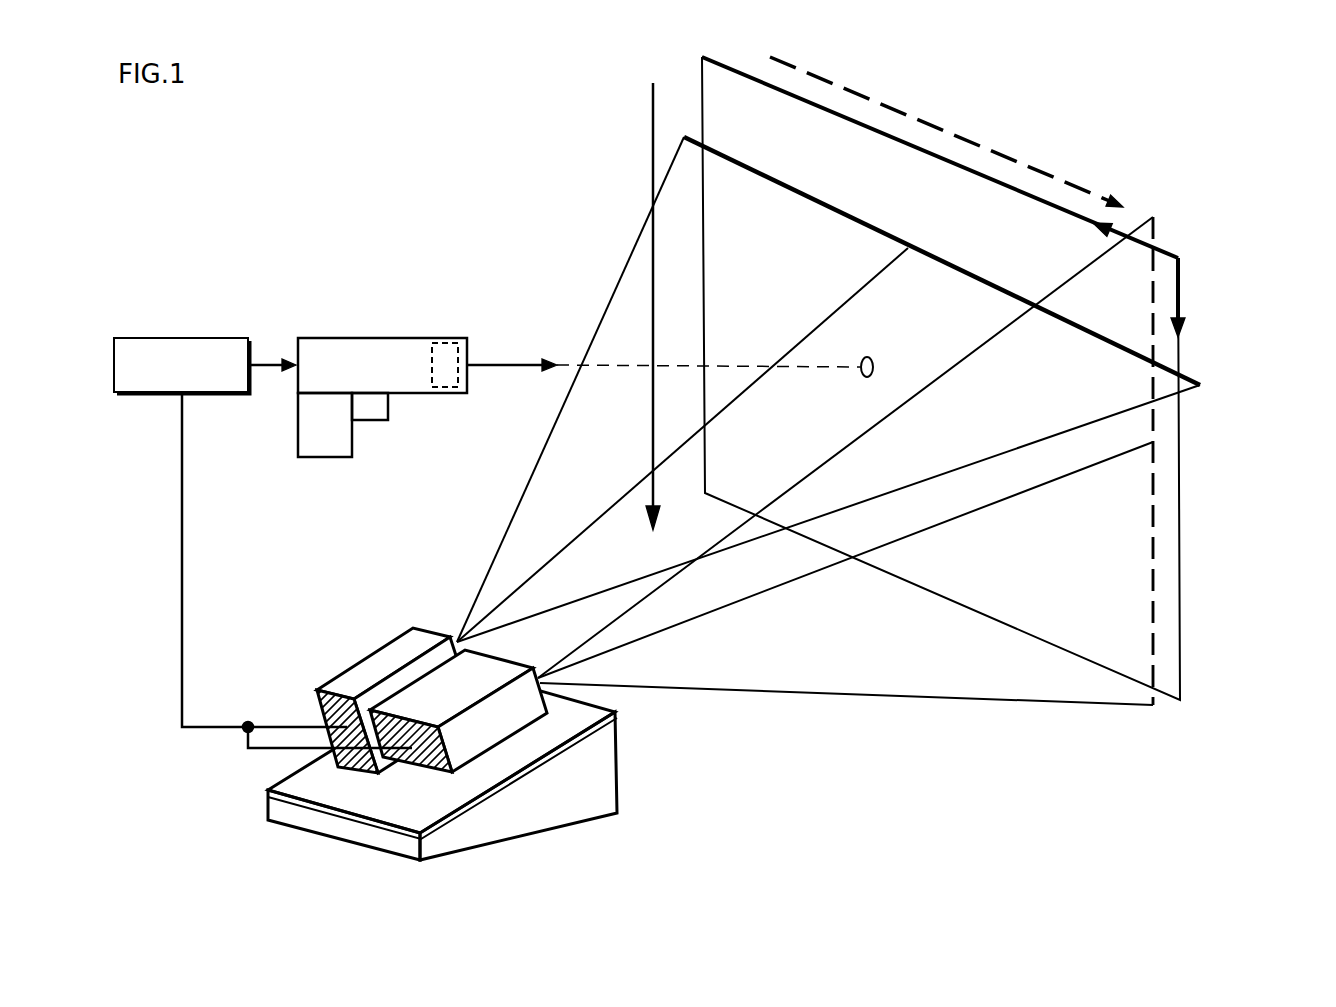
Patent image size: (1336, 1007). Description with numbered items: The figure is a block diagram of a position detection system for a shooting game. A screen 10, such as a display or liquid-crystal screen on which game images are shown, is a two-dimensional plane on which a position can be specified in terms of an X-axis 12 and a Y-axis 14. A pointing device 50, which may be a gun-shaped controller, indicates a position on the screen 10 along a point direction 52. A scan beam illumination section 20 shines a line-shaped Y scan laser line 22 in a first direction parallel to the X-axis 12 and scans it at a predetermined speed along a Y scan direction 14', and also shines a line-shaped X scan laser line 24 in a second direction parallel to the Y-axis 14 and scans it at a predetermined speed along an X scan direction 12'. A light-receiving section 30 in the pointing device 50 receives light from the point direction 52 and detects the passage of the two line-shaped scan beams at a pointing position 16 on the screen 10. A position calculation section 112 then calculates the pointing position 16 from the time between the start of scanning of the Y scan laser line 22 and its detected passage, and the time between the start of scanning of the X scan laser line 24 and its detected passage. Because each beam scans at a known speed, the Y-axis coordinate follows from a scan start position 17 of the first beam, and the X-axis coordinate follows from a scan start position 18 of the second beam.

The screen 10 is at (1180, 447).
The X-axis 12 is at (981, 157).
The X scan direction 12' is at (946, 132).
The Y-axis 14 is at (1233, 297).
The Y scan direction 14' is at (578, 306).
The pointing position 16 is at (870, 357).
The scan start position 17 is at (838, 114).
The scan start position 18 is at (1153, 553).
The scan beam illumination section 20 is at (447, 697).
The Y scan laser line 22 is at (767, 178).
The X scan laser line 24 is at (1150, 645).
The light-receiving section 30 is at (436, 343).
The pointing device 50 is at (333, 338).
The point direction 52 is at (497, 365).
The position calculation section 112 is at (163, 338).